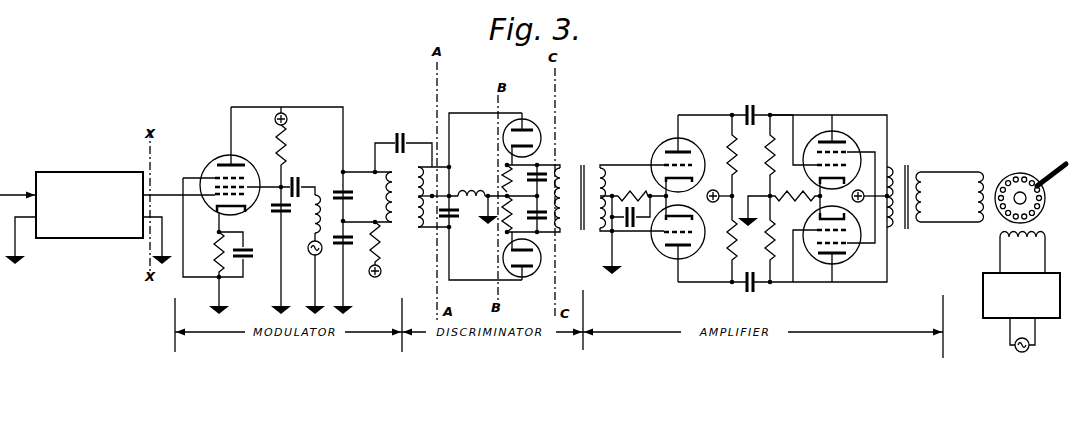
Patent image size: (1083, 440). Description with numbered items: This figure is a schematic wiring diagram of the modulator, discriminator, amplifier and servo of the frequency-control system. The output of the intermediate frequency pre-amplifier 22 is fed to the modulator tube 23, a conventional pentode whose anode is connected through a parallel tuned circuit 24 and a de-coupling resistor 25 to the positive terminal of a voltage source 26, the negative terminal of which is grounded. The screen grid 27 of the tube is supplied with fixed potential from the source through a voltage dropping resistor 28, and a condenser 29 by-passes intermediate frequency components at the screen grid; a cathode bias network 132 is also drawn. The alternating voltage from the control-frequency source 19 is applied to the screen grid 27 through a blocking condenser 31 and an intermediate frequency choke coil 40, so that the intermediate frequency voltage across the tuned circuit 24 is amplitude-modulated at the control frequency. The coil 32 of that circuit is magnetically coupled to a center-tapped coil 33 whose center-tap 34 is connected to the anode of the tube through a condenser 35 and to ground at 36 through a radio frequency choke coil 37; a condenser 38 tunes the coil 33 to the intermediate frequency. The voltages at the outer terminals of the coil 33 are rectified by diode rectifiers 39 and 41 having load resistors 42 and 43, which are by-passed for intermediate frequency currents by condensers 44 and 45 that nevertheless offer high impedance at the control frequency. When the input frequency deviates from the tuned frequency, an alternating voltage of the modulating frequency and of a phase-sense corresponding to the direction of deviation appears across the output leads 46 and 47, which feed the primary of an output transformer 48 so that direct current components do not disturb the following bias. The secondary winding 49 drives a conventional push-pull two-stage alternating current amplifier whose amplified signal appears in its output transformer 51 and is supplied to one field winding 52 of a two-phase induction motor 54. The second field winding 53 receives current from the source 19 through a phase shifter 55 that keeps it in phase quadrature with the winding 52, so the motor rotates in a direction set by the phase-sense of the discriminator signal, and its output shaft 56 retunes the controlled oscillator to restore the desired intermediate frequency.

The pre-amplifier 22 is at (80, 172).
The modulator tube 23 is at (212, 161).
The screen grid 27 is at (246, 183).
The cathode bias resistor and capacitor 132 is at (226, 273).
The voltage source 26 is at (285, 115).
The voltage dropping resistor 28 is at (289, 155).
The condenser 29 is at (275, 216).
The blocking condenser 31 is at (300, 185).
The intermediate frequency choke coil 40 is at (312, 222).
The source 19 is at (308, 259).
The parallel tuned circuit 24 is at (367, 197).
The coil 32 is at (381, 149).
The condenser 35 is at (402, 134).
The center-tapped coil 33 is at (421, 166).
The center-tap 34 is at (417, 228).
The de-coupling resistor 25 is at (382, 252).
The ground 36 is at (458, 219).
The radio frequency choke coil 37 is at (472, 195).
The condenser 38 is at (464, 241).
The load resistor 42 is at (492, 182).
The load resistor 43 is at (504, 242).
The rectifier 39 is at (534, 126).
The rectifier 41 is at (531, 279).
The by-pass condenser 44 is at (540, 172).
The by-pass condenser 45 is at (546, 242).
The output lead 46 is at (560, 168).
The output lead 47 is at (566, 232).
The output transformer 48 is at (601, 166).
The secondary winding 49 is at (602, 164).
The output transformer 51 is at (911, 167).
The field winding 52 is at (978, 172).
The output shaft 56 is at (1044, 202).
The two-phase induction motor 54 is at (1036, 181).
The second field winding 53 is at (999, 241).
The phase shifter 55 is at (983, 297).